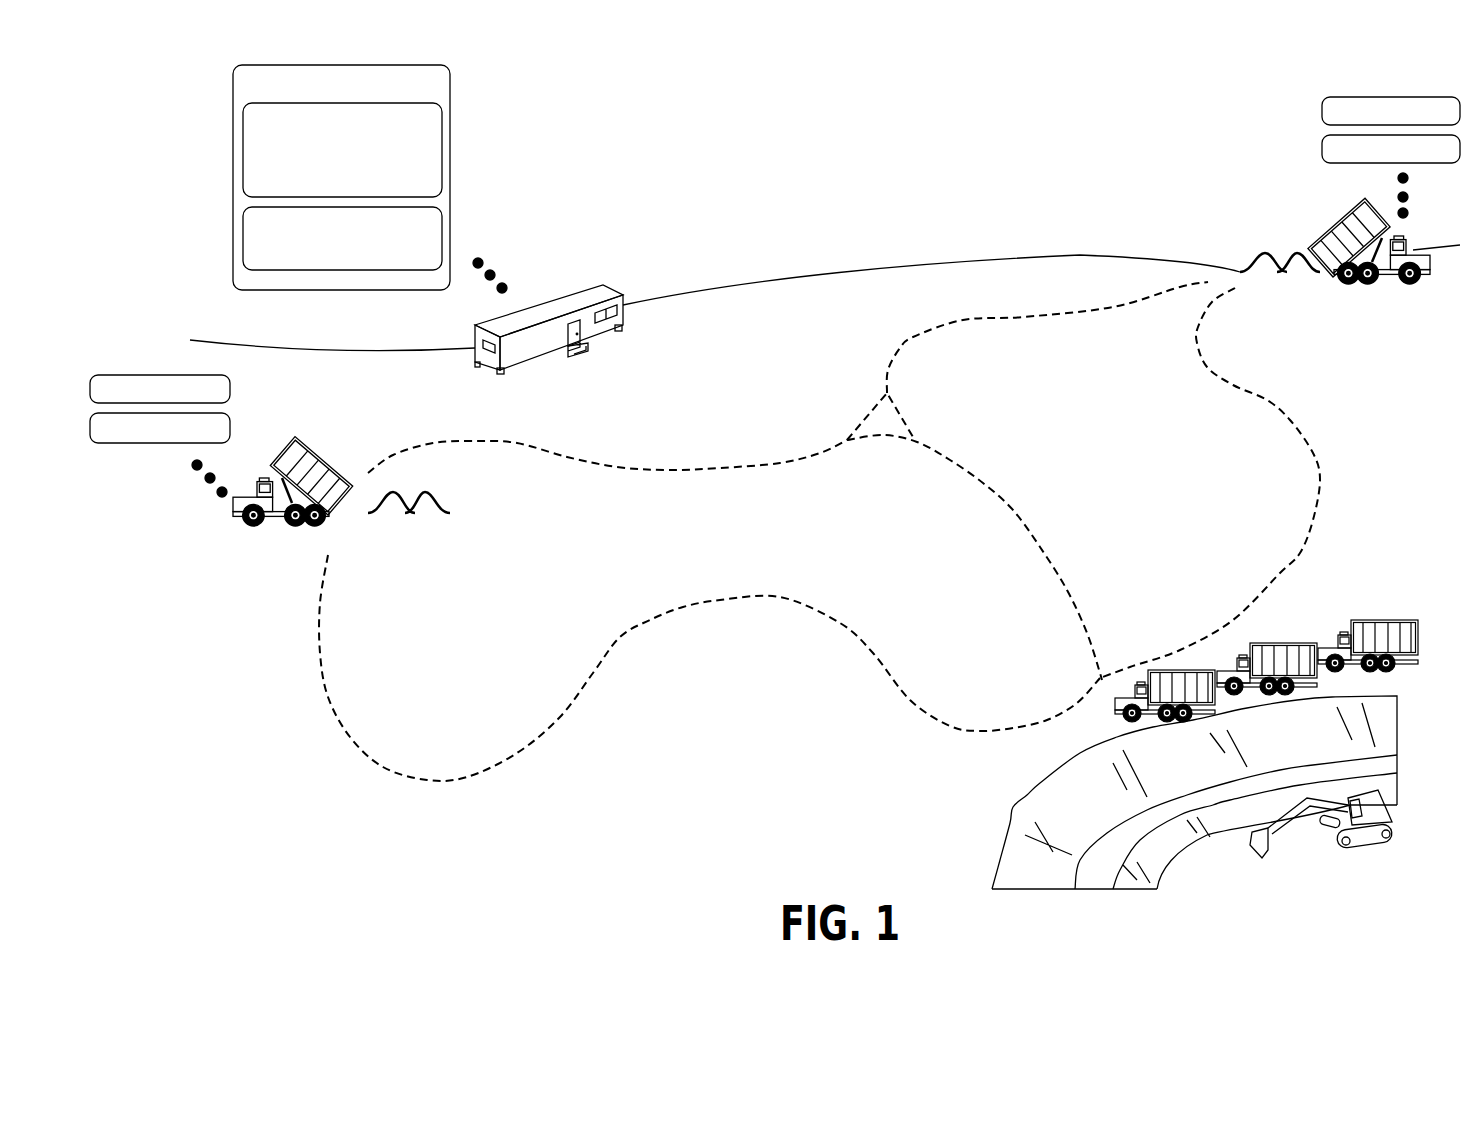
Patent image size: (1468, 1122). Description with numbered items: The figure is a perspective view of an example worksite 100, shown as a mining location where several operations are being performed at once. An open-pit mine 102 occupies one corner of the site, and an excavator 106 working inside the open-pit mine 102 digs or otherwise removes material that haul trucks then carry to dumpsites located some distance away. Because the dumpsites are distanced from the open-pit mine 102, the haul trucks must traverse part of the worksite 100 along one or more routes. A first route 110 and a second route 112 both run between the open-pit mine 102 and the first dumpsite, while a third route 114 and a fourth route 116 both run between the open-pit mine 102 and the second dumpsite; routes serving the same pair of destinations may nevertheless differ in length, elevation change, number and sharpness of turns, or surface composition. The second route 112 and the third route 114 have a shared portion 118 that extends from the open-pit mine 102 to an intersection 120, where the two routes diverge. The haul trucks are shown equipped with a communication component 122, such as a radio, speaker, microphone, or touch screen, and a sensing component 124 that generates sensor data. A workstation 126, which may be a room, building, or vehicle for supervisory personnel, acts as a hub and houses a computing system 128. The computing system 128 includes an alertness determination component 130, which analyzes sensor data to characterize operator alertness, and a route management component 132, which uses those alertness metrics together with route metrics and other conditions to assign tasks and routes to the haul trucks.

The worksite 100 is at (288, 802).
The open-pit mine 102 is at (1194, 792).
The excavator 106 is at (1370, 840).
The first route 110 is at (650, 627).
The second route 112 is at (727, 463).
The third route 114 is at (1025, 318).
The fourth route 116 is at (1292, 422).
The shared portion 118 is at (1013, 510).
The intersection 120 is at (856, 404).
The communication component 122 is at (775, 250).
The sensing component 124 is at (775, 289).
The workstation 126 is at (577, 292).
The computing system 128 is at (341, 177).
The alertness determination component 130 is at (342, 150).
The route management component 132 is at (342, 238).